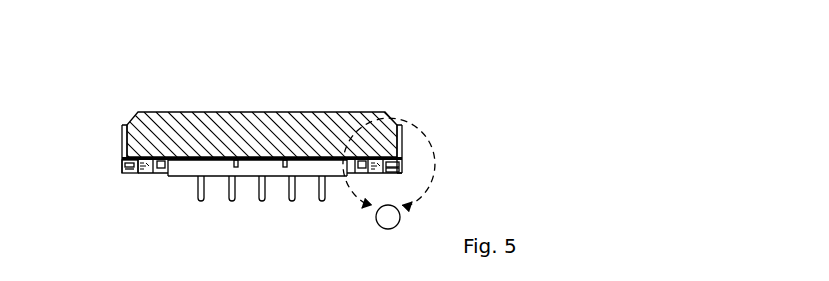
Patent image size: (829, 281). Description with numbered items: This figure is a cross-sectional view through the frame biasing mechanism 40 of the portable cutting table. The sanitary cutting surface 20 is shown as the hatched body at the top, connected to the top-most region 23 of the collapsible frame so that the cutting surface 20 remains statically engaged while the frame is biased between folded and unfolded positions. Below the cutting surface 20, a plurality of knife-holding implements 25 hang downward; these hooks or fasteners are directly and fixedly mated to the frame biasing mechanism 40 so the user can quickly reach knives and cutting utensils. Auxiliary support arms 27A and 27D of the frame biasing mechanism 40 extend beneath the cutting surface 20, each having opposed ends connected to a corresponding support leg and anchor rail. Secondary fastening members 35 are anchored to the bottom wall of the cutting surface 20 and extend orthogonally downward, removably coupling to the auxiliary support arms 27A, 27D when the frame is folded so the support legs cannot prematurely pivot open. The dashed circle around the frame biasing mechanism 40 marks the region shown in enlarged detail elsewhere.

The cutting surface 20 is at (268, 116).
The top-most region 23 is at (120, 152).
The knife-holding implements 25 is at (218, 201).
The auxiliary support arm 27A is at (293, 155).
The auxiliary support arm 27D is at (202, 155).
The secondary fastening members 35 is at (258, 155).
The frame biasing mechanism 40 is at (441, 131).